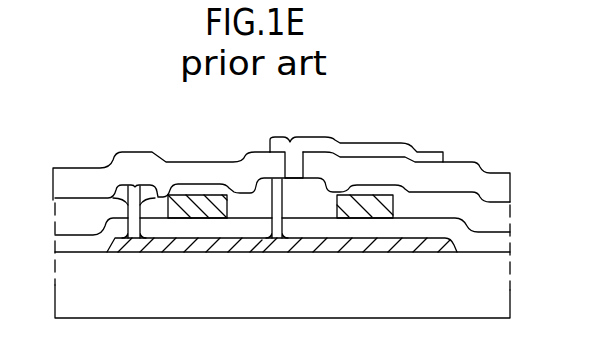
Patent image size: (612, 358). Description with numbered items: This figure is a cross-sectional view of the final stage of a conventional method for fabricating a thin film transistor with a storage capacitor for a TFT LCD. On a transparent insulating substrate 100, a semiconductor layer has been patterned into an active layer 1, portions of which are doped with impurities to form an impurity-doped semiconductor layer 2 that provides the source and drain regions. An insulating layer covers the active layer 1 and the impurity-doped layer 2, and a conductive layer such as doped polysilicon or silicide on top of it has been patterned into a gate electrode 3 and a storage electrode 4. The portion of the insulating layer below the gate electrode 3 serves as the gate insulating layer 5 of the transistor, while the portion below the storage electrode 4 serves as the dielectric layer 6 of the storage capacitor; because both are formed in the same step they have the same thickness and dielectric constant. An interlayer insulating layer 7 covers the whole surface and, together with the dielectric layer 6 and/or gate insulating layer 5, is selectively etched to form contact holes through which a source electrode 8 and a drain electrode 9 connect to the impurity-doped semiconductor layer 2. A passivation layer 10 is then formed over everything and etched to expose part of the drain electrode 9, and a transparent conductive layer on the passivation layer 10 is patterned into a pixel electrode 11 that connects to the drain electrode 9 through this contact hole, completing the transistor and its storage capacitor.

The transparent insulating substrate 100 is at (500, 278).
The active layer 1 is at (190, 248).
The impurity-doped semiconductor layer 2 is at (133, 244).
The gate electrode 3 is at (203, 202).
The storage electrode 4 is at (350, 198).
The gate insulating layer 5 is at (227, 230).
The dielectric layer 6 is at (358, 228).
The interlayer insulating layer 7 is at (500, 205).
The source electrode 8 is at (135, 200).
The drain electrode 9 is at (272, 198).
The passivation layer 10 is at (498, 185).
The pixel electrode 11 is at (385, 150).